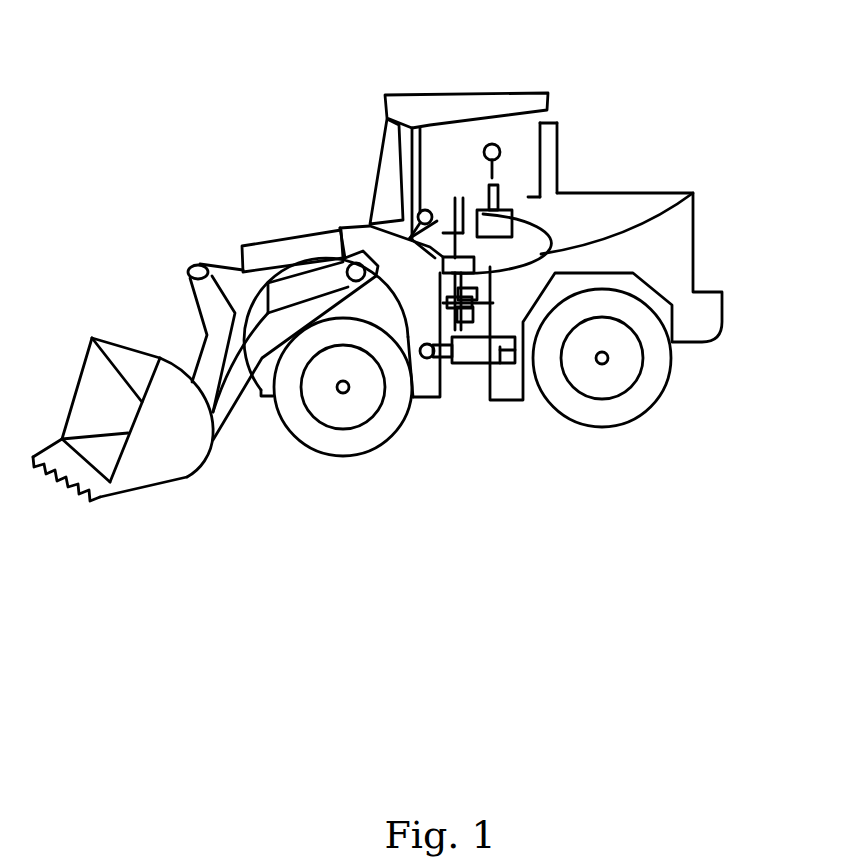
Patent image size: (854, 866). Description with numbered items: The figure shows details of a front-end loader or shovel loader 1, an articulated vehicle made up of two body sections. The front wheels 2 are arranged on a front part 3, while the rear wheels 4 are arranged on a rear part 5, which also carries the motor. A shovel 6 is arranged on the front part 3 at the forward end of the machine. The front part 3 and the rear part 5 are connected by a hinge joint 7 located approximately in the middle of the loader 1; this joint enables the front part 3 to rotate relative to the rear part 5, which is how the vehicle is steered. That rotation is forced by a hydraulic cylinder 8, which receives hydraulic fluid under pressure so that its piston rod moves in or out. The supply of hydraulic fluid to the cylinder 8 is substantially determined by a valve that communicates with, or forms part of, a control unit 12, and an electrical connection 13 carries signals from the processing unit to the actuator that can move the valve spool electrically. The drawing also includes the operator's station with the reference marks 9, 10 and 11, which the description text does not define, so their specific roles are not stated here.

The front-end loader 1 is at (758, 241).
The front wheels 2 is at (372, 422).
The front part 3 is at (360, 244).
The rear wheels 4 is at (637, 395).
The rear part 5 is at (617, 207).
The shovel 6 is at (158, 458).
The hinge joint 7 is at (465, 363).
The hydraulic cylinder 8 is at (501, 350).
The control lever 9 is at (450, 225).
The steering wheel 10 is at (414, 125).
The driver's seat 11 is at (500, 150).
The control unit 12 is at (413, 236).
The electrical connection 13 is at (693, 193).